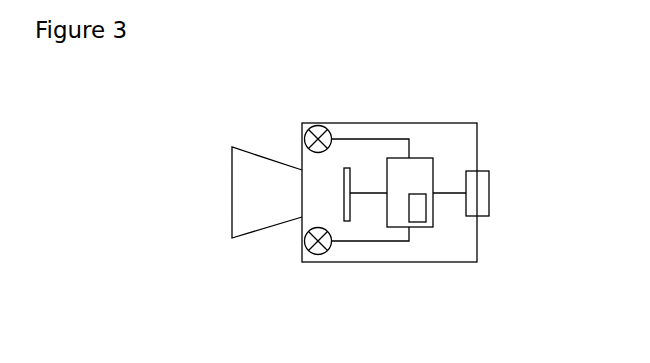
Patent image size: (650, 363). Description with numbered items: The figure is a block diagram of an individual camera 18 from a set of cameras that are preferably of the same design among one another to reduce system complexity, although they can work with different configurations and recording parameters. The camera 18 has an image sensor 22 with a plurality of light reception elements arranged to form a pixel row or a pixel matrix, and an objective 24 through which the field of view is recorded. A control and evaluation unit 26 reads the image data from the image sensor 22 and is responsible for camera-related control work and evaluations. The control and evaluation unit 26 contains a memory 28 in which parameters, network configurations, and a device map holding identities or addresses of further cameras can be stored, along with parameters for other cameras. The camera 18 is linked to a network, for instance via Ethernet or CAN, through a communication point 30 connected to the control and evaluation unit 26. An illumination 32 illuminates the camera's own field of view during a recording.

The camera 18 is at (498, 107).
The image sensor 22 is at (346, 168).
The objective 24 is at (255, 178).
The control and evaluation unit 26 is at (405, 167).
The memory 28 is at (422, 215).
The communication point 30 is at (483, 196).
The illumination 32 is at (304, 124).